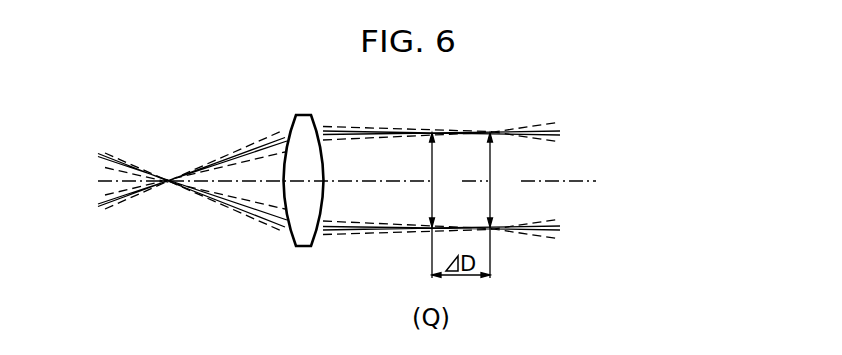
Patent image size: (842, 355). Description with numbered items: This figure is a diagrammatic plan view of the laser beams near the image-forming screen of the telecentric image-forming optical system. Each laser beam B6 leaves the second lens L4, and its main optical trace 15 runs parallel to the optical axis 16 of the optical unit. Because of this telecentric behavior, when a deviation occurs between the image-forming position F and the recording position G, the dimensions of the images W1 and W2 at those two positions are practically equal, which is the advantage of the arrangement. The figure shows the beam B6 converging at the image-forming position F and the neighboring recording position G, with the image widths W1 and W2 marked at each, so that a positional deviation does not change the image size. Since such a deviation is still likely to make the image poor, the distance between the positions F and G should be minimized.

The second lens L4 is at (301, 114).
The optical axis 16 is at (362, 182).
The main optical trace 15 is at (332, 220).
The laser beam B6 is at (333, 126).
The image dimension at the image-forming position W1 is at (447, 180).
The image dimension at the recording position W2 is at (505, 180).
The image-forming position F is at (433, 267).
The recording position G is at (491, 267).